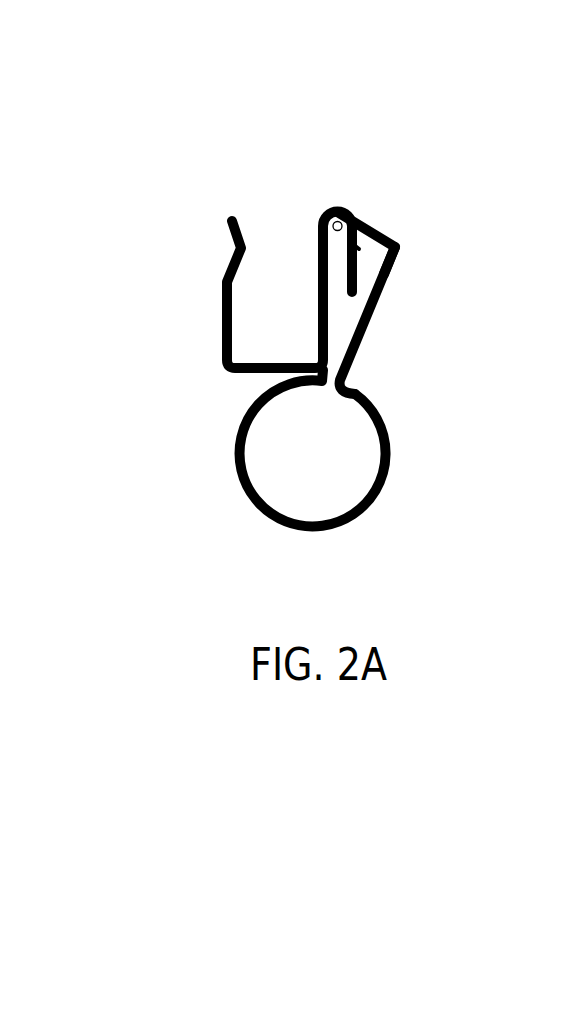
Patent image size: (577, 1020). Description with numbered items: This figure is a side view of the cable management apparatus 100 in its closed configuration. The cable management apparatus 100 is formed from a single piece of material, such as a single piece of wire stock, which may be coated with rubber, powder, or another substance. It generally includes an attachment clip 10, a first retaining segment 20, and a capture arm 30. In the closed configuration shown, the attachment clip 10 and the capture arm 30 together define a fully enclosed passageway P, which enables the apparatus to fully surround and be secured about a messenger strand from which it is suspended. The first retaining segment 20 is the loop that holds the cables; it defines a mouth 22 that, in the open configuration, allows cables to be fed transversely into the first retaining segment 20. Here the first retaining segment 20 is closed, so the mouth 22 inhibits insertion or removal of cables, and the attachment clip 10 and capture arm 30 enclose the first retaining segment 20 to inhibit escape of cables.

The cable management apparatus 100 is at (190, 173).
The attachment clip 10 is at (355, 273).
The passageway P is at (340, 228).
The capture arm 30 is at (403, 240).
The mouth 22 is at (340, 339).
The first retaining segment 20 is at (388, 472).